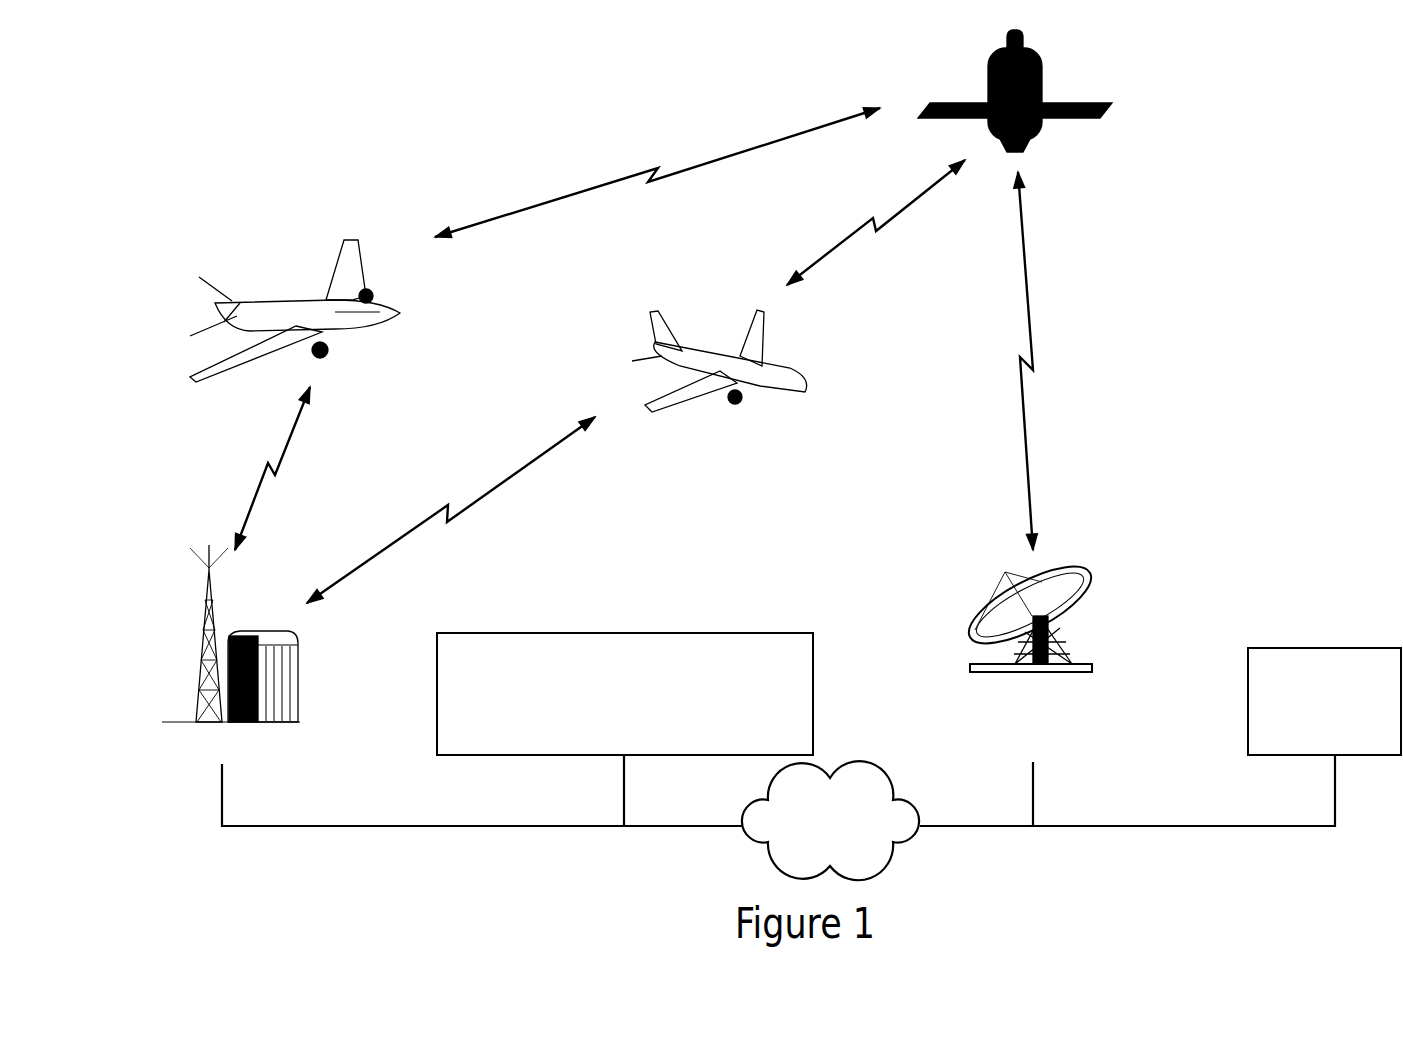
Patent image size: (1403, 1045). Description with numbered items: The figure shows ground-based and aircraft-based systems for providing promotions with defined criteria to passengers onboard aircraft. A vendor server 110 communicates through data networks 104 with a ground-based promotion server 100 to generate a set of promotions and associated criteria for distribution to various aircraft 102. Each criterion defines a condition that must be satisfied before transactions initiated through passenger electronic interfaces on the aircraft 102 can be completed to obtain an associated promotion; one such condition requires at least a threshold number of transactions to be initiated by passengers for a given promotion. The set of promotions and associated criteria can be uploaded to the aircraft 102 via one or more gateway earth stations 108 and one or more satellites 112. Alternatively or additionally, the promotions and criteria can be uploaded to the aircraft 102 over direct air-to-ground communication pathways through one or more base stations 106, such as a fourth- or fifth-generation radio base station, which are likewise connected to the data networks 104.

The ground-based promotion server 100 is at (625, 694).
The aircraft 102 is at (498, 326).
The data networks 104 is at (830, 820).
The base station 106 is at (229, 653).
The gateway earth station 108 is at (1030, 654).
The vendor server 110 is at (1324, 701).
The satellite 112 is at (1035, 91).